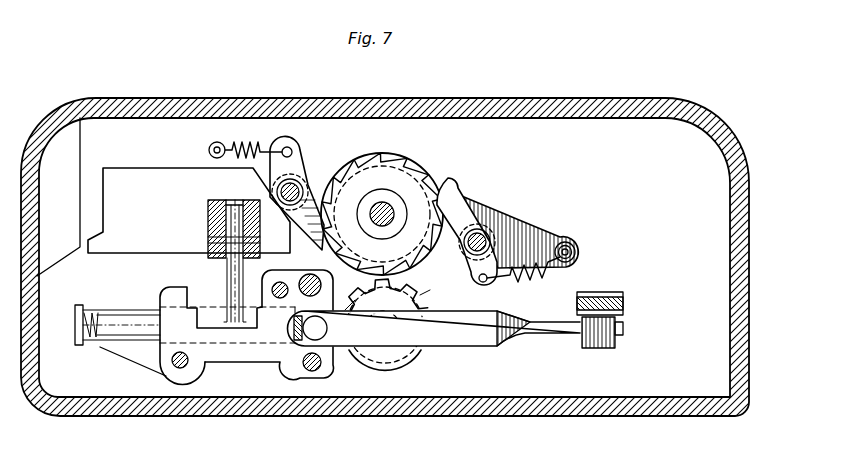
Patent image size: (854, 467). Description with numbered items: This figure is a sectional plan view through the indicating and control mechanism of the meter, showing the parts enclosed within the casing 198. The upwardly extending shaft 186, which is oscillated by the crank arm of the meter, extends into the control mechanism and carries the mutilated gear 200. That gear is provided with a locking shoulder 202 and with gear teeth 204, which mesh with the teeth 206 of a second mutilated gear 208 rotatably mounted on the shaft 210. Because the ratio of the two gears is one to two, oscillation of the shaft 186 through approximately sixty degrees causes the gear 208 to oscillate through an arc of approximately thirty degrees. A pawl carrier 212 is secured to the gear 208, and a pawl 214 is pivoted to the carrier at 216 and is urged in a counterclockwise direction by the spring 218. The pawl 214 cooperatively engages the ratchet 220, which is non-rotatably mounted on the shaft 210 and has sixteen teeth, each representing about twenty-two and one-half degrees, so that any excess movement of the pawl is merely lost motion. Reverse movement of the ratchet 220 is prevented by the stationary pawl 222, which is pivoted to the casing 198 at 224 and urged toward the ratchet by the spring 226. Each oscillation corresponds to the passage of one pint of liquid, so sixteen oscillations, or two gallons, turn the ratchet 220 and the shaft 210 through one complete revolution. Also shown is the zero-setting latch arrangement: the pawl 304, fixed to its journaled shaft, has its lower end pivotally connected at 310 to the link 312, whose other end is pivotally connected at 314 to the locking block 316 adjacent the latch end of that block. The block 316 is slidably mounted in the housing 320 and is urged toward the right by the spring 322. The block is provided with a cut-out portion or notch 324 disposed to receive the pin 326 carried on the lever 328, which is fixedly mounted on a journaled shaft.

The casing 198 is at (552, 99).
The mutilated gear 200 is at (383, 364).
The locking shoulder 202 is at (355, 340).
The gear teeth 204 is at (410, 282).
The teeth 206 is at (310, 366).
The mutilated gear 208 is at (420, 196).
The shaft 210 is at (385, 206).
The pawl carrier 212 is at (522, 238).
The pawl 214 is at (470, 203).
The pivot 216 is at (482, 238).
The spring 218 is at (556, 276).
The ratchet 220 is at (400, 197).
The stationary pawl 222 is at (298, 155).
The pivot 224 is at (300, 198).
The spring 226 is at (244, 143).
The shaft 186 is at (402, 347).
The pawl 304 is at (624, 302).
The pivotal connection 310 is at (617, 341).
The link 312 is at (500, 339).
The pivotal connection 314 is at (308, 330).
The locking block 316 is at (138, 340).
The housing 320 is at (184, 374).
The spring 322 is at (93, 348).
The notch 324 is at (197, 308).
The pin 326 is at (212, 248).
The lever 328 is at (210, 213).